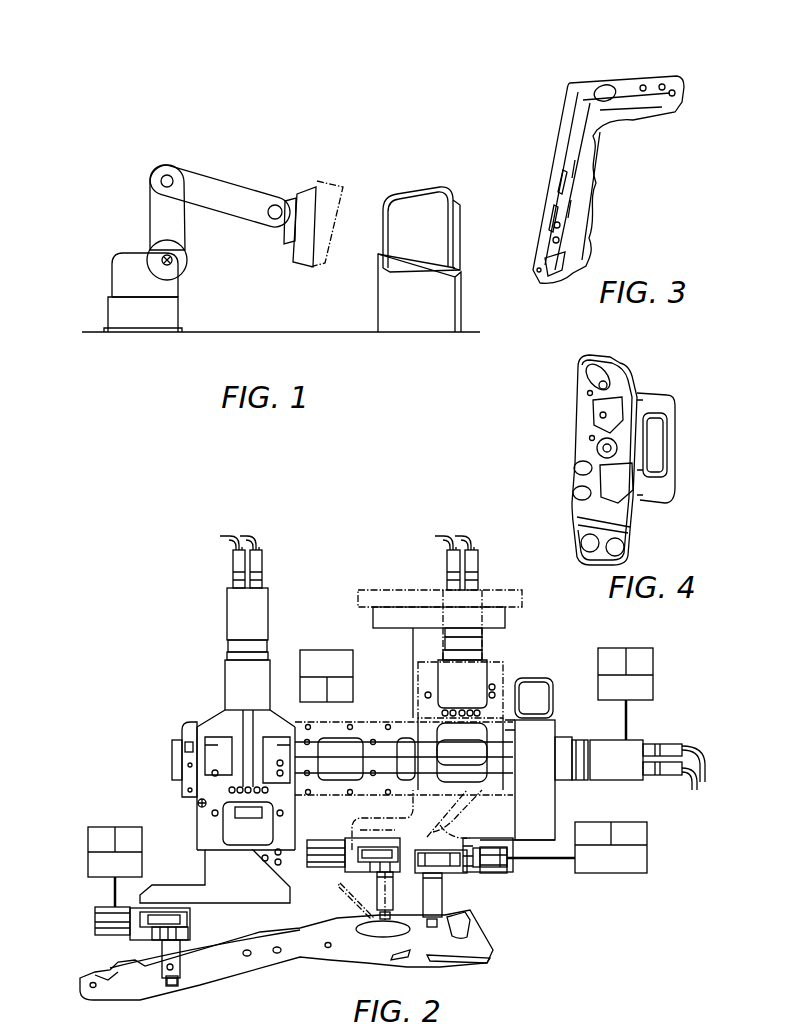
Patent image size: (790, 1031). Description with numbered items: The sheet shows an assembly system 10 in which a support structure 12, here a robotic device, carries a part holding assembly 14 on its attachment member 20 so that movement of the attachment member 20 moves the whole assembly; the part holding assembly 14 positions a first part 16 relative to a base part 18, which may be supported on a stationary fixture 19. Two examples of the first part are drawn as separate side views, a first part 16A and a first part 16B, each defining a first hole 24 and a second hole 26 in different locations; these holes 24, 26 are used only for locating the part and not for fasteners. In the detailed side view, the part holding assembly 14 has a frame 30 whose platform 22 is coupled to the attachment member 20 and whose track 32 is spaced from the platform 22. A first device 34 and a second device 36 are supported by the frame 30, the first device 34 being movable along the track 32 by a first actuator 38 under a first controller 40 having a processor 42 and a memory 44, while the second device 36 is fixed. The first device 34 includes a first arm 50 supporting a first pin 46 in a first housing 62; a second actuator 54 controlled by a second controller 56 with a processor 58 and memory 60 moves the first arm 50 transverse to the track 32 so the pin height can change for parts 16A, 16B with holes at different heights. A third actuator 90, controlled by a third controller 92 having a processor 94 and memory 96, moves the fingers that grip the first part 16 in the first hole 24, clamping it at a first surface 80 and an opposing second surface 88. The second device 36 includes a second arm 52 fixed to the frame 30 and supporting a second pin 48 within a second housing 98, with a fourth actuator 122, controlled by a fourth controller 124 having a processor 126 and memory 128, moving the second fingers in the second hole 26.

In FIG. 1, the assembly system 10 is at (126, 170).
In FIG. 1, the support structure 12 is at (112, 280).
In FIG. 2, the support structure 12 is at (387, 590).
In FIG. 1, the part holding assembly 14 is at (298, 190).
In FIG. 2, the part holding assembly 14 is at (158, 626).
In FIG. 1, the first part 16 is at (335, 182).
In FIG. 2, the first part 16 is at (263, 976).
In FIG. 3, the first part 16A is at (624, 164).
In FIG. 4, the first part 16B is at (634, 375).
In FIG. 2, the first part 16B is at (353, 912).
In FIG. 1, the base part 18 is at (427, 192).
In FIG. 1, the stationary fixture 19 is at (378, 300).
In FIG. 1, the attachment member 20 is at (288, 222).
In FIG. 2, the attachment member 20 is at (438, 584).
In FIG. 2, the platform 22 is at (505, 620).
In FIG. 3, the first hole 24 is at (553, 225).
In FIG. 4, the first hole 24 is at (587, 392).
In FIG. 3, the second hole 26 is at (674, 92).
In FIG. 4, the second hole 26 is at (589, 437).
In FIG. 2, the frame 30 is at (413, 653).
In FIG. 2, the track 32 is at (343, 776).
In FIG. 2, the first device 34 is at (213, 692).
In FIG. 2, the second device 36 is at (562, 807).
In FIG. 2, the first actuator 38 is at (632, 775).
In FIG. 2, the first controller 40 is at (612, 703).
In FIG. 2, the processor 42 is at (603, 672).
In FIG. 2, the memory 44 is at (630, 672).
In FIG. 2, the first pin 46 is at (172, 988).
In FIG. 2, the second pin 48 is at (467, 918).
In FIG. 2, the first arm 50 is at (197, 885).
In FIG. 2, the second arm 52 is at (485, 837).
In FIG. 2, the second actuator 54 is at (268, 618).
In FIG. 2, the second controller 56 is at (332, 650).
In FIG. 2, the processor 58 is at (304, 699).
In FIG. 2, the memory 60 is at (331, 699).
In FIG. 2, the first housing 62 is at (160, 953).
In FIG. 2, the first surface 80 is at (407, 913).
In FIG. 2, the second surface 88 is at (215, 967).
In FIG. 2, the third actuator 90 is at (95, 922).
In FIG. 2, the third controller 92 is at (90, 878).
In FIG. 2, the processor 94 is at (92, 849).
In FIG. 2, the memory 96 is at (119, 849).
In FIG. 2, the second housing 98 is at (442, 902).
In FIG. 2, the fourth actuator 122 is at (500, 875).
In FIG. 2, the fourth controller 124 is at (647, 858).
In FIG. 2, the processor 126 is at (580, 842).
In FIG. 2, the memory 128 is at (616, 842).